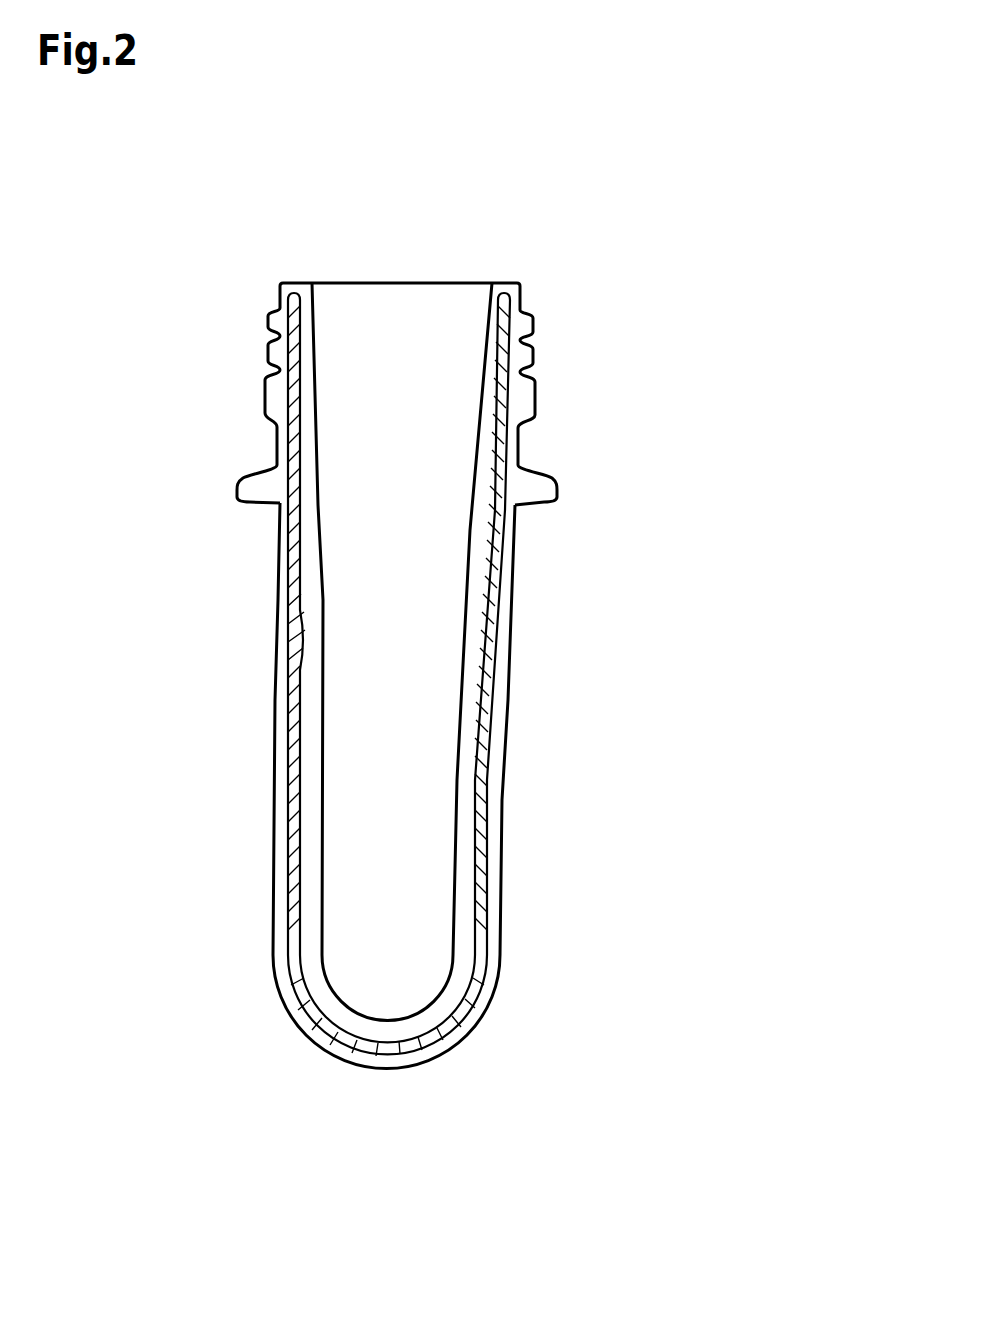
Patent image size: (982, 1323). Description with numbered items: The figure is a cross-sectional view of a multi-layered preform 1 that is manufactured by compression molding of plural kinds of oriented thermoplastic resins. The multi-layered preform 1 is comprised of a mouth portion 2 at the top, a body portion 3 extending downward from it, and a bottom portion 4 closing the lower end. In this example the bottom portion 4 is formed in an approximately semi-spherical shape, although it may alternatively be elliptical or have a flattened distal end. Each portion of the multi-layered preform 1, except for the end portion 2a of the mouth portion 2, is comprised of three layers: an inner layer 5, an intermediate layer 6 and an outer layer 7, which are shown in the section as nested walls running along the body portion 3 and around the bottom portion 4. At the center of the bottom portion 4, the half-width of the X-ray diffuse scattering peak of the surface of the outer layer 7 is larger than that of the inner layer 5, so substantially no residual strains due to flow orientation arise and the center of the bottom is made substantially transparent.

The multi-layered preform 1 is at (572, 597).
The mouth portion 2 is at (535, 357).
The end portion of the mouth portion 2a is at (510, 282).
The body portion 3 is at (503, 732).
The bottom portion 4 is at (455, 1048).
The inner layer 5 is at (313, 630).
The intermediate layer 6 is at (300, 682).
The outer layer 7 is at (283, 760).